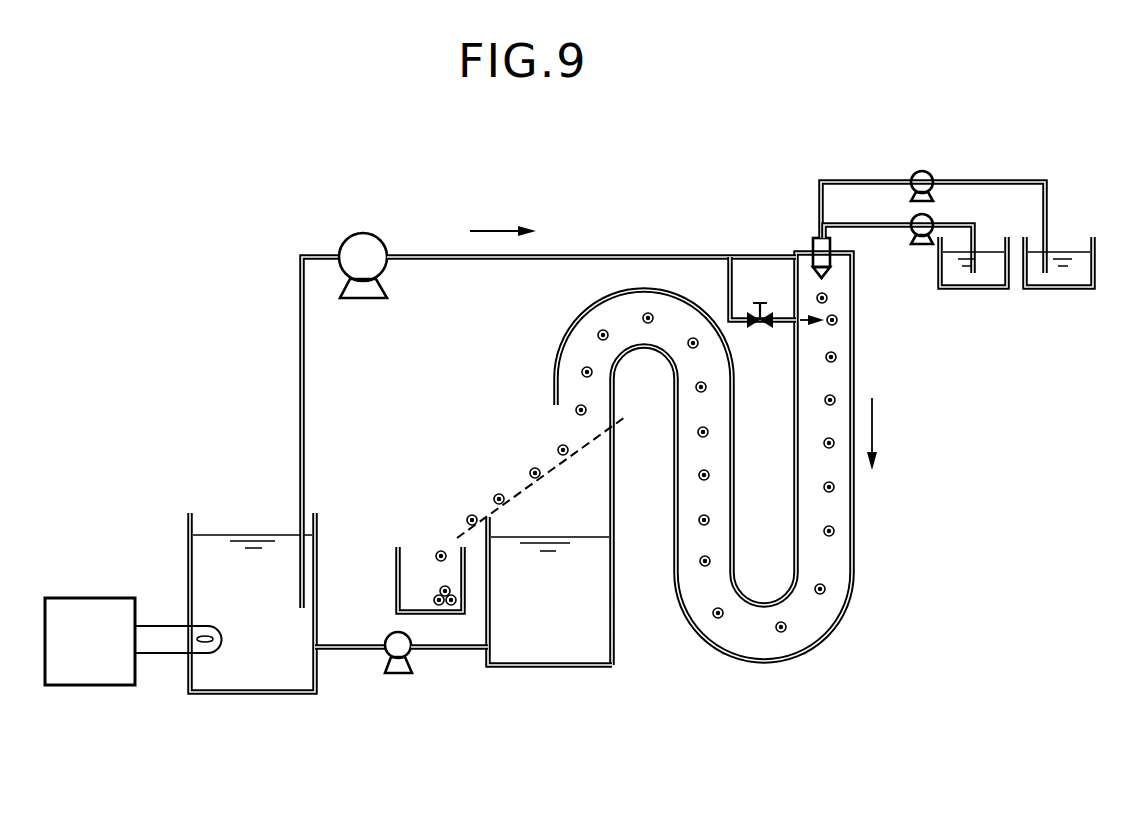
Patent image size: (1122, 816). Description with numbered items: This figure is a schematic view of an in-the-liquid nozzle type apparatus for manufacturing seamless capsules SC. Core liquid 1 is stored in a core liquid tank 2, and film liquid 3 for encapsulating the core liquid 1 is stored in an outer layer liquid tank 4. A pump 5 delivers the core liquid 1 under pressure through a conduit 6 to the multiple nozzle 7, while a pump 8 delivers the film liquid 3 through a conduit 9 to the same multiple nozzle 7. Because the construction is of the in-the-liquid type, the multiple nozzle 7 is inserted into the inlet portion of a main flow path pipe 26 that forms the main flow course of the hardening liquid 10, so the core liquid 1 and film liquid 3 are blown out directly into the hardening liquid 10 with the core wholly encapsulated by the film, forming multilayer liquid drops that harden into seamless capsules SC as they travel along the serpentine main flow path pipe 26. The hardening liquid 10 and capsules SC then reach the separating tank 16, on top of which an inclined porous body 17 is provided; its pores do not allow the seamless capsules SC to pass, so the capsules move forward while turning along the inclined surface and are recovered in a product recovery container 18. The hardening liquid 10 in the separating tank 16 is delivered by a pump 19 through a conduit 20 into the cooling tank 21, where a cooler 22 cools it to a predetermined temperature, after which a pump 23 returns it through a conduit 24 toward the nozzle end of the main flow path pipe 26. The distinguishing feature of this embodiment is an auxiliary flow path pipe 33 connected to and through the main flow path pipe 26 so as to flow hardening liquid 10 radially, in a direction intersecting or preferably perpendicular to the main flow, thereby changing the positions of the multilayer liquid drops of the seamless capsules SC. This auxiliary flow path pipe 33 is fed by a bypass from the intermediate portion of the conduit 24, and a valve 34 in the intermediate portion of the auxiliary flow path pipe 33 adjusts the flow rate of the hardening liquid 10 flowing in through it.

The core liquid 1 is at (1075, 265).
The core liquid tank 2 is at (1048, 290).
The film liquid 3 is at (988, 265).
The outer layer liquid tank 4 is at (958, 290).
The pump 5 is at (922, 170).
The conduit 6 is at (1000, 180).
The multiple nozzle 7 is at (816, 248).
The pump 8 is at (934, 216).
The conduit 9 is at (887, 230).
The hardening liquid 10 is at (262, 650).
The separating tank 16 is at (600, 667).
The inclined porous body 17 is at (520, 490).
The product recovery container 18 is at (398, 565).
The pump 19 is at (400, 675).
The conduit 20 is at (455, 660).
The cooling tank 21 is at (310, 690).
The cooler 22 is at (100, 685).
The pump 23 is at (370, 240).
The conduit 24 is at (611, 254).
The main flow path pipe 26 is at (855, 548).
The auxiliary flow path pipe 33 is at (776, 328).
The valve 34 is at (752, 328).
The seamless capsule SC is at (440, 588).